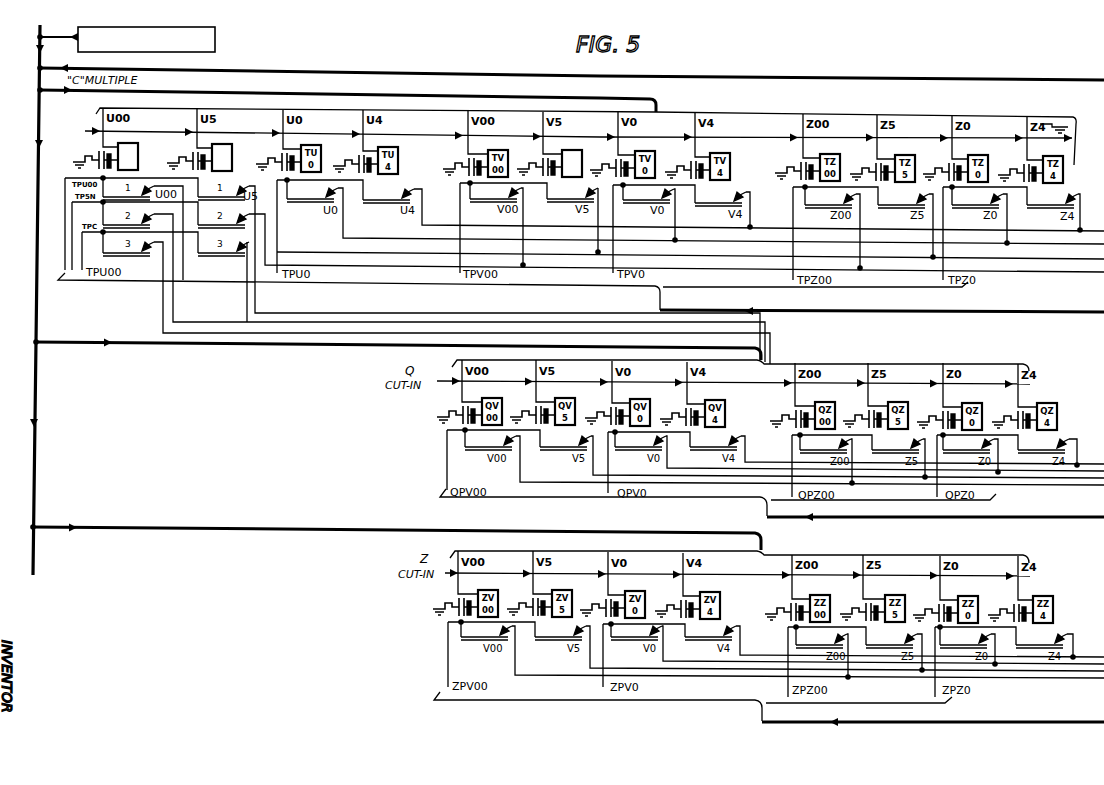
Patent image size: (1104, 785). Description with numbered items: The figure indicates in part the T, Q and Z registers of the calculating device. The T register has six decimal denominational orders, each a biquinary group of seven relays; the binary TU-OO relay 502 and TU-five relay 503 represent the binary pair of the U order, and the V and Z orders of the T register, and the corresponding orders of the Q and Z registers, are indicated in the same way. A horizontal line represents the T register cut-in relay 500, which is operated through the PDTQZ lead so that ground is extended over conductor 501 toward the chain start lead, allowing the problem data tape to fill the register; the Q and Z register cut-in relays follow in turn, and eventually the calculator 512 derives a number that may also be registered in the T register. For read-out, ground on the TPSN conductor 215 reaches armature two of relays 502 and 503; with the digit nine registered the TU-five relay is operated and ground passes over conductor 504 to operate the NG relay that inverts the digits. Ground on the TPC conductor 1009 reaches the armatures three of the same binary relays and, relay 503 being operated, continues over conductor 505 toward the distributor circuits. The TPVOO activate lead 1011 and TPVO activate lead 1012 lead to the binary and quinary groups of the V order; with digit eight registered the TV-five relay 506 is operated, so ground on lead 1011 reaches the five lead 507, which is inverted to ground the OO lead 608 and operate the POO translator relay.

The calculator 512 is at (215, 39).
The TU-00 relay 502 is at (128, 143).
The TU-5 relay 503 is at (222, 144).
The TV-5 relay 506 is at (568, 150).
The T register cut-in relay 500 is at (558, 131).
The conductor 501 is at (1074, 160).
The conductor 504 is at (266, 229).
The conductor 505 is at (250, 290).
The 5 lead 507 is at (753, 257).
The TP5N conductor 215 is at (72, 210).
The TPC conductor 1009 is at (82, 247).
The TPVOO activate lead 1011 is at (460, 268).
The TPVO activate lead 1012 is at (613, 262).
The OO lead 608 is at (1024, 486).